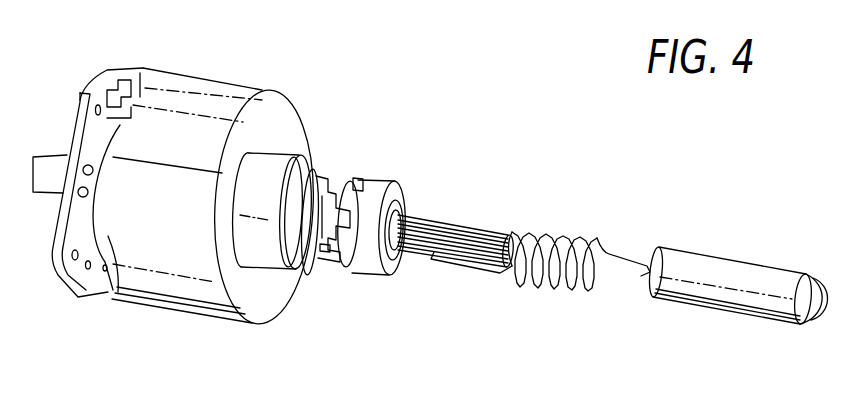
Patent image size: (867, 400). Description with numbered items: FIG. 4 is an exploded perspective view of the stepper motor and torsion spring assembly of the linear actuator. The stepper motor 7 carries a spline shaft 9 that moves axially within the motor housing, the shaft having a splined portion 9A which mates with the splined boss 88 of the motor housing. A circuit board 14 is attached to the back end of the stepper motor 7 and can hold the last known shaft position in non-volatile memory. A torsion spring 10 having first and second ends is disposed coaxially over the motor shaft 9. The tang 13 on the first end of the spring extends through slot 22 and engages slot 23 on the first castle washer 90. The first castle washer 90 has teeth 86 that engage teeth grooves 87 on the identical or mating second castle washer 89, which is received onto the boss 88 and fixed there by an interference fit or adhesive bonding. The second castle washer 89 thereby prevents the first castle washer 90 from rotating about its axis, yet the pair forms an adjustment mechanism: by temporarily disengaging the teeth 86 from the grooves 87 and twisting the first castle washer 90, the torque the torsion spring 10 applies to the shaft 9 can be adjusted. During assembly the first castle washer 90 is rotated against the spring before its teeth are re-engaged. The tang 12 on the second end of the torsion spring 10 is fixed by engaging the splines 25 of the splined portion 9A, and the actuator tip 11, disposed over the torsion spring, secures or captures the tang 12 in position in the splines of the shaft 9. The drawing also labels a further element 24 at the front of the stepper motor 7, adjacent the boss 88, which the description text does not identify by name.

The stepper motor 7 is at (175, 295).
The spline shaft 9 is at (455, 233).
The splined portion 9A is at (432, 223).
The torsion spring 10 is at (585, 238).
The actuator tip 11 is at (718, 263).
The tang 12 is at (645, 281).
The tang 13 is at (432, 263).
The circuit board 14 is at (95, 83).
The slot 22 is at (386, 262).
The slot 23 is at (332, 257).
The hub 24 is at (283, 160).
The splines 25 is at (514, 232).
The teeth 86 is at (355, 187).
The teeth grooves 87 is at (323, 250).
The splined boss 88 is at (305, 192).
The second castle washer 89 is at (346, 197).
The first castle washer 90 is at (375, 180).